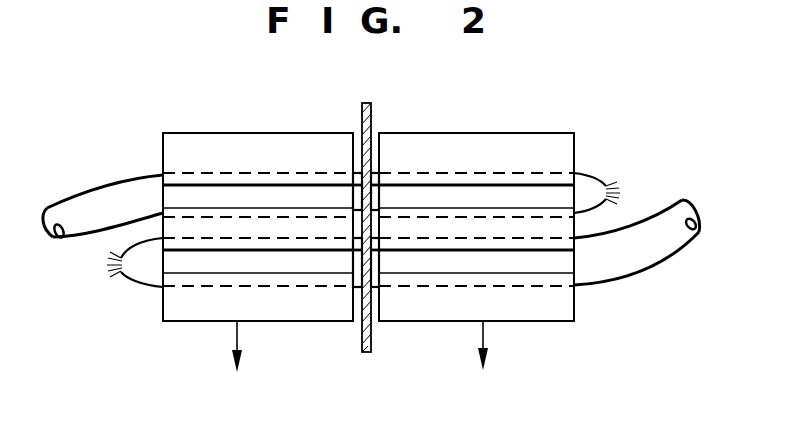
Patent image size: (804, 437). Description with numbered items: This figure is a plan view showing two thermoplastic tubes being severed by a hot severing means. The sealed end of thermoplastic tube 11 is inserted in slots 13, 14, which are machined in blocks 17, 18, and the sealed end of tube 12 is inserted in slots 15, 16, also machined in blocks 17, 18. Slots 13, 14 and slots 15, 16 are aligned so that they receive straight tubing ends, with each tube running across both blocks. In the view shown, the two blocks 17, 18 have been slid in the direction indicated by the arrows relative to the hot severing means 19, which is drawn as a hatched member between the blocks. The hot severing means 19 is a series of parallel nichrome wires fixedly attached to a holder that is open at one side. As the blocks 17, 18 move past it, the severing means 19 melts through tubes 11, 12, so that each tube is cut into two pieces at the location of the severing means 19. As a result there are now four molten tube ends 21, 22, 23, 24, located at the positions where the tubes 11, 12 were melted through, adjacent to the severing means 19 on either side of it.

The thermoplastic tube 11 is at (110, 186).
The tube 12 is at (628, 225).
The slot 13 is at (185, 193).
The slot 14 is at (560, 186).
The slot 15 is at (192, 270).
The slot 16 is at (545, 265).
The block 17 is at (242, 129).
The block 18 is at (519, 126).
The hot severing means 19 is at (367, 120).
The molten tube end 21 is at (353, 173).
The molten tube end 22 is at (372, 176).
The molten tube end 23 is at (356, 290).
The molten tube end 24 is at (375, 292).